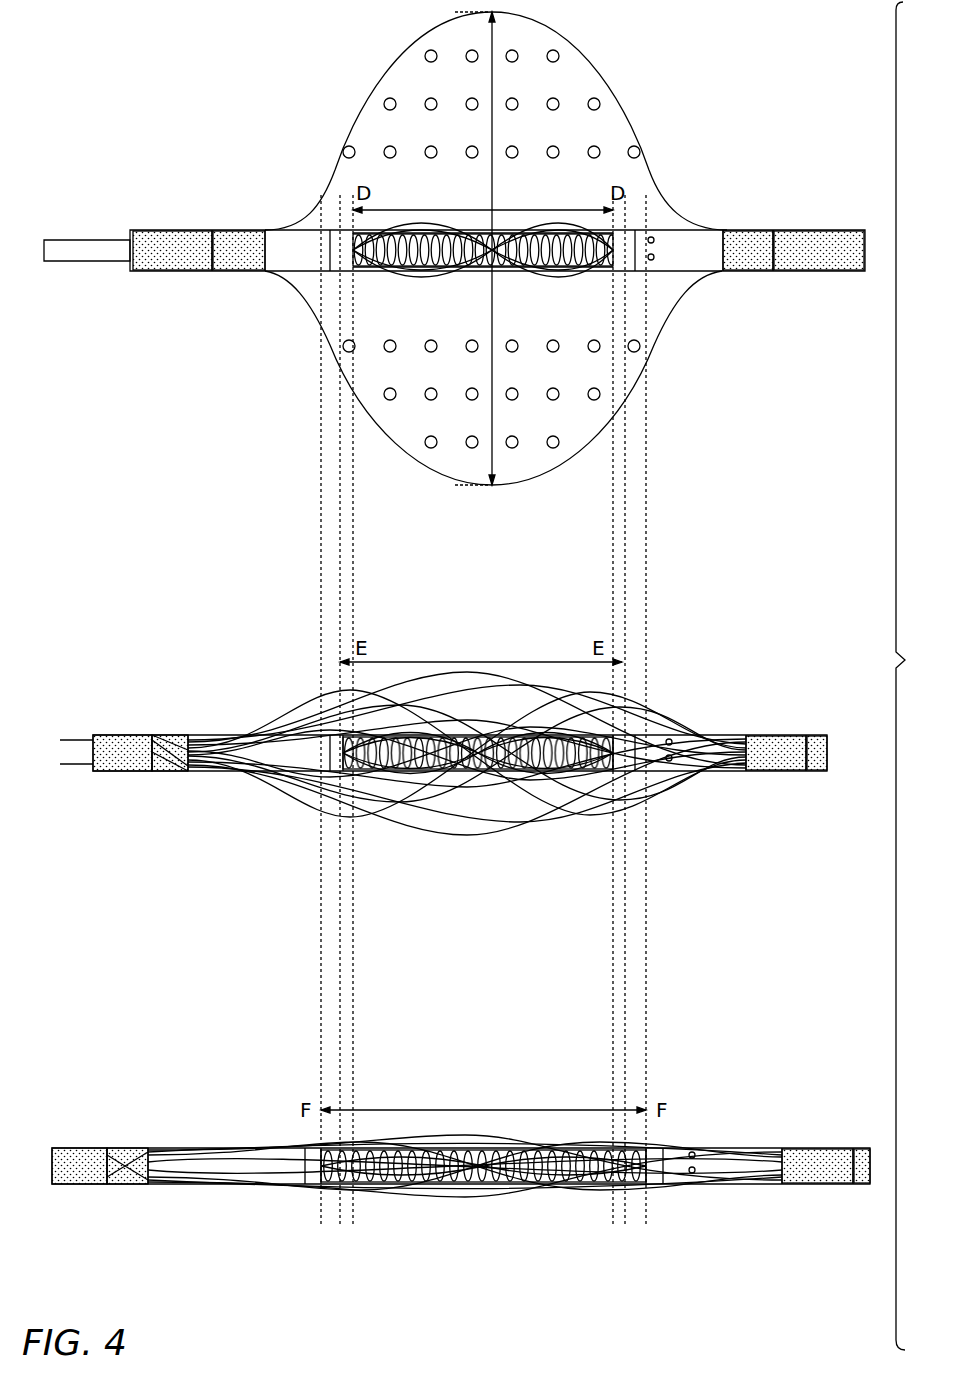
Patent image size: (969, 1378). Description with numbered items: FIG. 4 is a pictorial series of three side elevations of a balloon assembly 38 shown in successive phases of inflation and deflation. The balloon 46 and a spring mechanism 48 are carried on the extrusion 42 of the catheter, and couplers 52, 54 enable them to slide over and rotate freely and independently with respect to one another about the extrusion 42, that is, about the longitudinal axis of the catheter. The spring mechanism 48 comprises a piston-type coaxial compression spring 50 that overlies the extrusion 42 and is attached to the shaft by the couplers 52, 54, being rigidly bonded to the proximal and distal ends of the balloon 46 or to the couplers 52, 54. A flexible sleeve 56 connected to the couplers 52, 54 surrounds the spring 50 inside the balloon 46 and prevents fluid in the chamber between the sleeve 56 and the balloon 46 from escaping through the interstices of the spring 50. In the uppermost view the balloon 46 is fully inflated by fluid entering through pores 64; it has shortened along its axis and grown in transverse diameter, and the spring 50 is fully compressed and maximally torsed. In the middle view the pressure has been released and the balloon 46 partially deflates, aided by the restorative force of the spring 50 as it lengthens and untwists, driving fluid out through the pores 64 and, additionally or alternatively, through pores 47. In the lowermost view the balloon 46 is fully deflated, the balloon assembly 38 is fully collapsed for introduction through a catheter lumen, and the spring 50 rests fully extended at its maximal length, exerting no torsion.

The balloon assembly 38 is at (320, 63).
The extrusion 42 is at (80, 262).
The balloon 46 is at (640, 118).
The pores 47 is at (632, 146).
The spring mechanism 48 is at (510, 200).
The compression spring 50 is at (556, 272).
The coupler 52 is at (748, 240).
The coupler 54 is at (232, 238).
The flexible sleeve 56 is at (440, 272).
The pores 64 is at (652, 237).